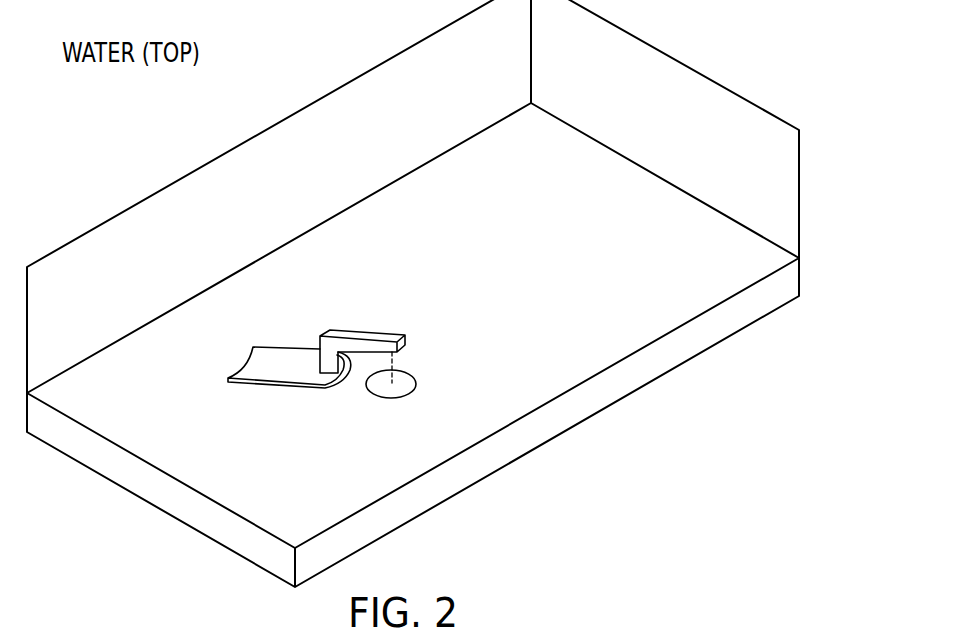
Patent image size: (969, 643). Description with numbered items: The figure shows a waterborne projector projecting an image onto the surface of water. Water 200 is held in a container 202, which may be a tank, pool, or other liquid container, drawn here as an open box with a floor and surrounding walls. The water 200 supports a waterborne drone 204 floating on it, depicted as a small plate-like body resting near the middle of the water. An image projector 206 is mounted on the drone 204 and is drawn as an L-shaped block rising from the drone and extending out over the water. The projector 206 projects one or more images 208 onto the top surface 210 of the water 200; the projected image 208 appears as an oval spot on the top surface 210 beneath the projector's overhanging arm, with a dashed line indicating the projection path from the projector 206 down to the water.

The water 200 is at (700, 335).
The container 202 is at (643, 73).
The waterborne drone 204 is at (288, 347).
The image projector 206 is at (367, 330).
The image 208 is at (418, 370).
The top surface 210 is at (505, 375).